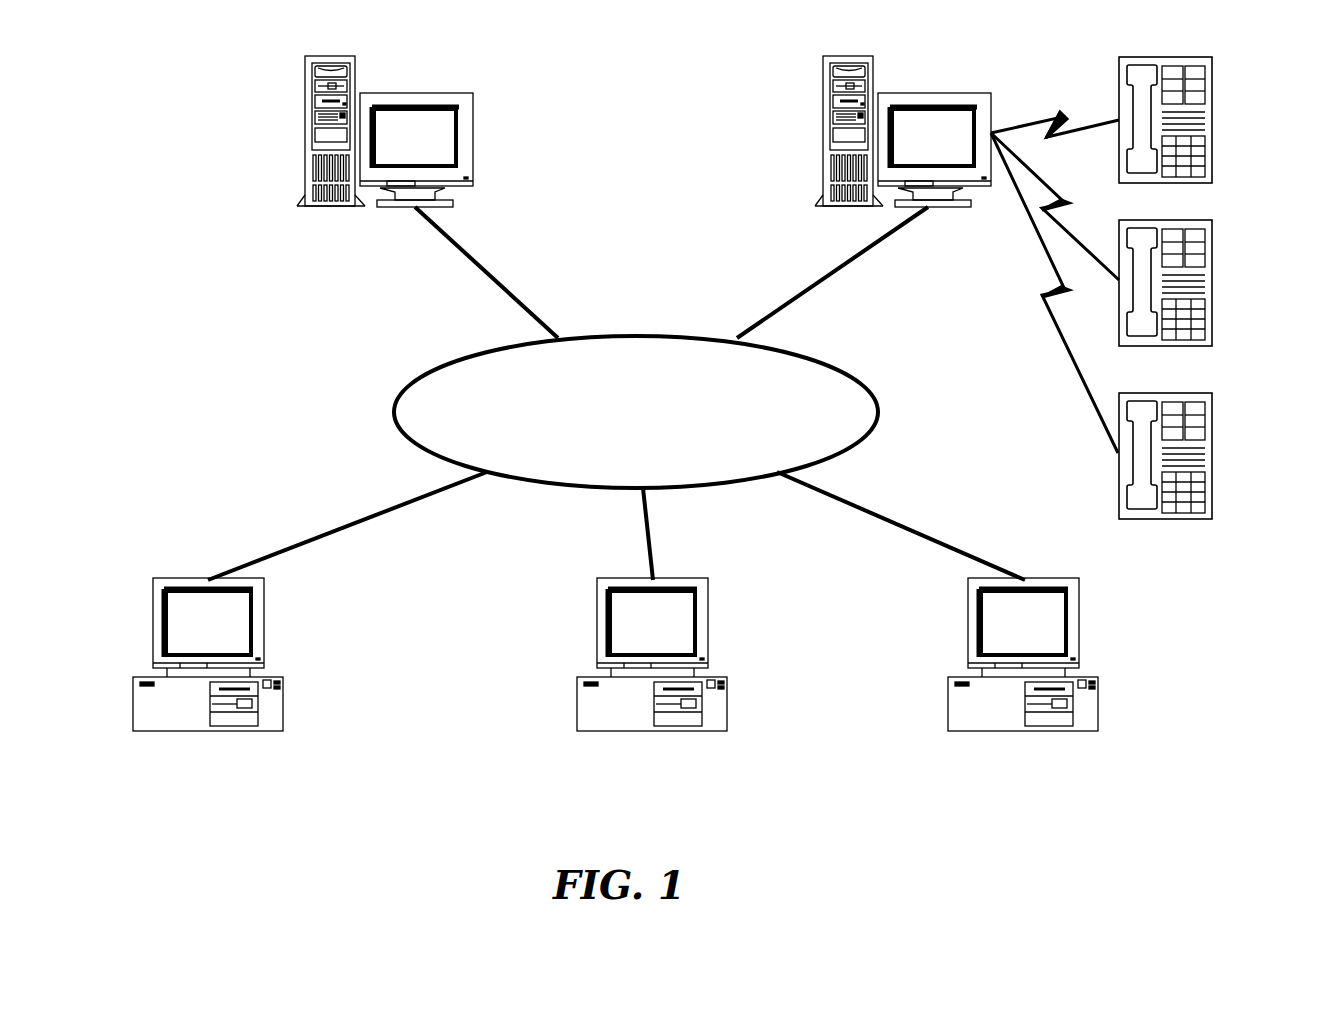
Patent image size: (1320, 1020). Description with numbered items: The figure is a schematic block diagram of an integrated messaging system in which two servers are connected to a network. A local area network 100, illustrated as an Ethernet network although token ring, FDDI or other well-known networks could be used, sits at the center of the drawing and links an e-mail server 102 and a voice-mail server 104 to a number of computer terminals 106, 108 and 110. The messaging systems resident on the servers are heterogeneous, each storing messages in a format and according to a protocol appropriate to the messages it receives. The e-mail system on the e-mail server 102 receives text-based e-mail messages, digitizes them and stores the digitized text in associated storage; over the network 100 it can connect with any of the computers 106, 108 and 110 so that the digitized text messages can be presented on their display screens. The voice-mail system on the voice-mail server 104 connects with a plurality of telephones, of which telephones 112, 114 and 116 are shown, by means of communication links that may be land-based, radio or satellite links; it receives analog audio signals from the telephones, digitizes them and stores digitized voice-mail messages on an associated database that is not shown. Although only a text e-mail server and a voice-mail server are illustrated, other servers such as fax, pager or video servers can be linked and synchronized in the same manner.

The local area network 100 is at (616, 393).
The e-mail server 102 is at (417, 131).
The voice-mail server 104 is at (926, 131).
The computer terminal 106 is at (240, 654).
The computer terminal 108 is at (686, 654).
The computer terminal 110 is at (1057, 654).
The telephone 112 is at (1217, 118).
The telephone 114 is at (1217, 280).
The telephone 116 is at (1217, 454).